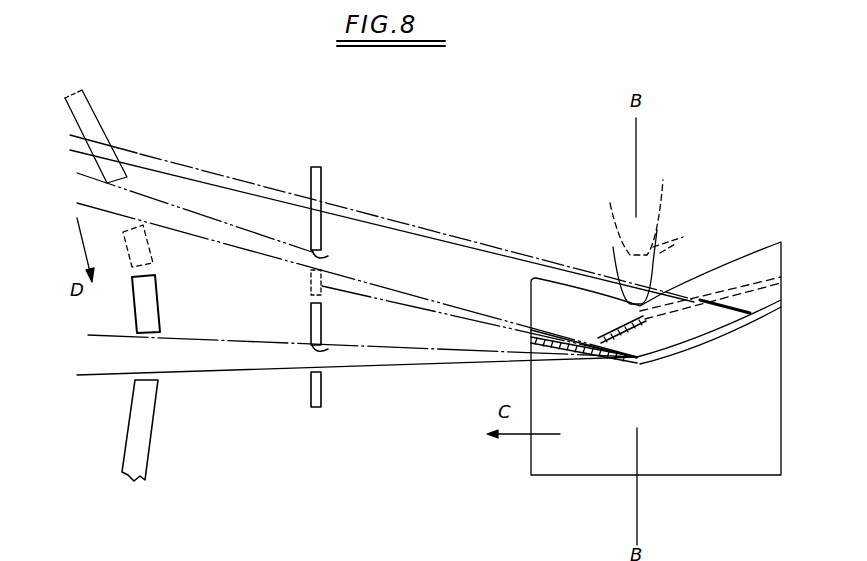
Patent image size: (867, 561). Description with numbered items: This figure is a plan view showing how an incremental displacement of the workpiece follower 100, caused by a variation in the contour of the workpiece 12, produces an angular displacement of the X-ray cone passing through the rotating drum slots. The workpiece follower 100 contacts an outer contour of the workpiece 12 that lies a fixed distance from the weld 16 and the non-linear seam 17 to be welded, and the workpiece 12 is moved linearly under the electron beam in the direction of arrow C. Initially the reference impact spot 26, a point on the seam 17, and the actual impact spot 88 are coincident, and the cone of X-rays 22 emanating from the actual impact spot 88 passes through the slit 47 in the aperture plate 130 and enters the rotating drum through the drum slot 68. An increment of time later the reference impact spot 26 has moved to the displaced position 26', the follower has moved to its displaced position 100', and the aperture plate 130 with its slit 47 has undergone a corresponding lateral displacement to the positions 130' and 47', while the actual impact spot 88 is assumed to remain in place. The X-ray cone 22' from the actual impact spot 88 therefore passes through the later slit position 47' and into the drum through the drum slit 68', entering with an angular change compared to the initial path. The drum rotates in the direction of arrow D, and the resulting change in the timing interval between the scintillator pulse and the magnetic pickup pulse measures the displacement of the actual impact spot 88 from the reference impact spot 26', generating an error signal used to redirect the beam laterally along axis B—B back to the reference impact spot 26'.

The workpiece 12 is at (680, 454).
The weld 16 is at (590, 361).
The non-linear seam 17 is at (768, 322).
The cone of X-rays 22 is at (357, 370).
The cone of X-rays (later position) 22' is at (382, 246).
The reference impact spot 26 is at (584, 376).
The displaced reference impact spot 26' is at (607, 325).
The slit 47 is at (341, 332).
The laterally displaced slit 47' is at (347, 251).
The drum slot 68 is at (160, 426).
The drum slit (later position) 68' is at (129, 136).
The actual impact spot 88 is at (643, 360).
The workpiece follower 100 is at (665, 267).
The displaced workpiece follower 100' is at (654, 209).
The aperture plate 130 is at (280, 362).
The displaced aperture plate 130' is at (283, 219).